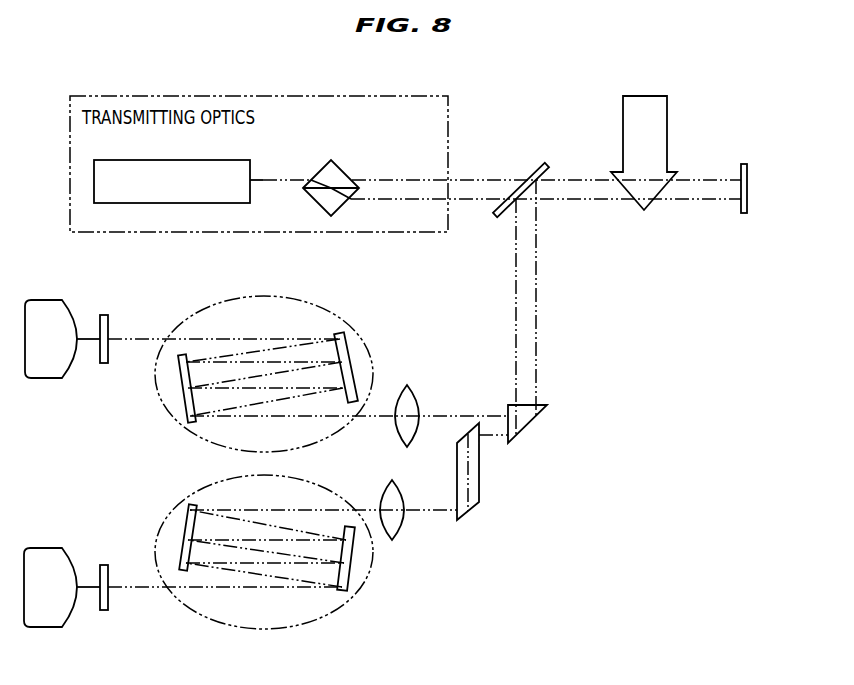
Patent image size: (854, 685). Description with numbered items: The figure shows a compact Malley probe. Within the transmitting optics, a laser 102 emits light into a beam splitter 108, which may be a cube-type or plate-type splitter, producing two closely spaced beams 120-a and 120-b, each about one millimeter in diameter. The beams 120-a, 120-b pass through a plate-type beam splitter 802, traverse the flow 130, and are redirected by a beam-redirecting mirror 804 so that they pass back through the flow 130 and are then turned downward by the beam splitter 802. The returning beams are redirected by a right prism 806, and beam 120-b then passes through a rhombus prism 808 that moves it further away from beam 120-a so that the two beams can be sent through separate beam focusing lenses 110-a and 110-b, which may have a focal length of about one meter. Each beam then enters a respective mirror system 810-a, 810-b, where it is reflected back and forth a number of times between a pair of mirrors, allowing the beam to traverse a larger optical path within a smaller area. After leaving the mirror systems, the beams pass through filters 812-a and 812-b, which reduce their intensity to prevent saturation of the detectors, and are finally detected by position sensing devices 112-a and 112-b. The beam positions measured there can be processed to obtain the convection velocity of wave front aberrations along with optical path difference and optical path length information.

The laser 102 is at (235, 160).
The beam splitter 108 is at (338, 166).
The beam 120-a is at (412, 178).
The beam 120-b is at (477, 201).
The beam splitter 802 is at (546, 170).
The flow 130 is at (667, 118).
The beam-redirecting mirror 804 is at (750, 180).
The position sensing device 112-a is at (48, 299).
The filter 812-a is at (110, 320).
The mirror system 810-a is at (296, 300).
The beam focusing lens 110-a is at (414, 392).
The right prism 806 is at (548, 412).
The rhombus prism 808 is at (481, 478).
The beam focusing lens 110-b is at (398, 534).
The position sensing device 112-b is at (48, 547).
The filter 812-b is at (108, 568).
The mirror system 810-b is at (286, 629).